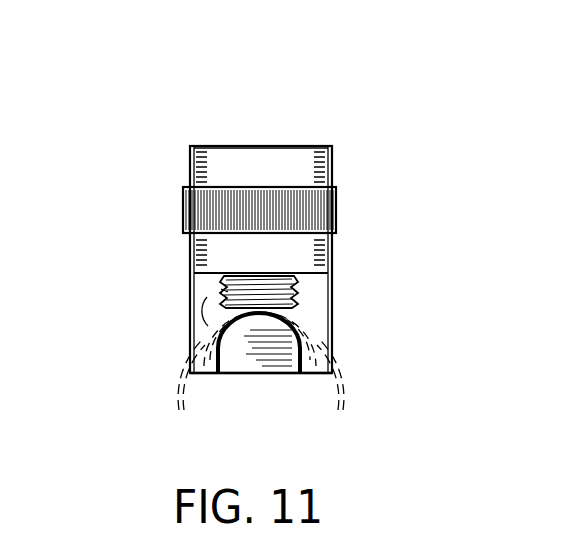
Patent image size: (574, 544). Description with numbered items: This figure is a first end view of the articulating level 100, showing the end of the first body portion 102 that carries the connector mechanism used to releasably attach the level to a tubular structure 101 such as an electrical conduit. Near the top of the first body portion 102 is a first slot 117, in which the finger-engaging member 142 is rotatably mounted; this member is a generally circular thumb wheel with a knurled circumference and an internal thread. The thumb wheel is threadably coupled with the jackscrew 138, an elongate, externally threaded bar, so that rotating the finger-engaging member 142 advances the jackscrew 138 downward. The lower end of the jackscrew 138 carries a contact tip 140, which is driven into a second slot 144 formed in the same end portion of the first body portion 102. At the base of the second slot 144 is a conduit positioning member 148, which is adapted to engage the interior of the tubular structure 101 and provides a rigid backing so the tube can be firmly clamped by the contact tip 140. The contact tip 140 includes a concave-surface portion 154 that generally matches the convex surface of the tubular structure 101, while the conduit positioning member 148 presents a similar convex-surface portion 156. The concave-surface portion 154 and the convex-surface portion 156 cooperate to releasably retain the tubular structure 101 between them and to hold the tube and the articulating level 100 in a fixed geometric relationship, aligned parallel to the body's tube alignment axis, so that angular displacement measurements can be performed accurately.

The articulating level 100 is at (197, 108).
The first body portion 102 is at (173, 162).
The first slot 117 is at (282, 187).
The finger-engaging member 142 is at (336, 206).
The concave-surface portion 154 is at (270, 292).
The jackscrew 138 is at (300, 290).
The contact tip 140 is at (228, 290).
The second slot 144 is at (200, 312).
The convex-surface portion 156 is at (290, 318).
The conduit positioning member 148 is at (330, 372).
The tubular structure 101 is at (182, 385).